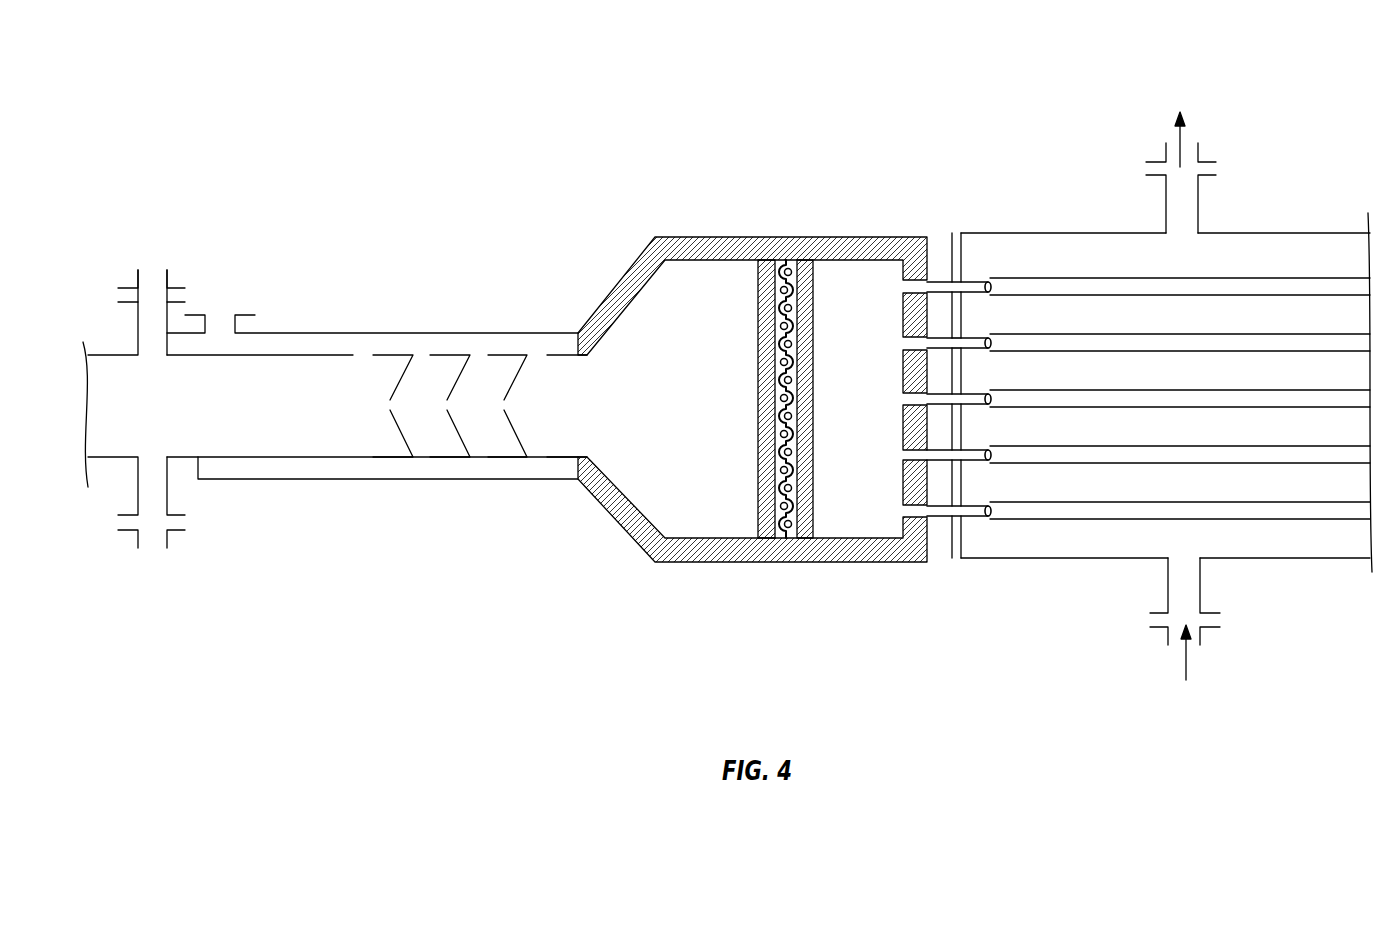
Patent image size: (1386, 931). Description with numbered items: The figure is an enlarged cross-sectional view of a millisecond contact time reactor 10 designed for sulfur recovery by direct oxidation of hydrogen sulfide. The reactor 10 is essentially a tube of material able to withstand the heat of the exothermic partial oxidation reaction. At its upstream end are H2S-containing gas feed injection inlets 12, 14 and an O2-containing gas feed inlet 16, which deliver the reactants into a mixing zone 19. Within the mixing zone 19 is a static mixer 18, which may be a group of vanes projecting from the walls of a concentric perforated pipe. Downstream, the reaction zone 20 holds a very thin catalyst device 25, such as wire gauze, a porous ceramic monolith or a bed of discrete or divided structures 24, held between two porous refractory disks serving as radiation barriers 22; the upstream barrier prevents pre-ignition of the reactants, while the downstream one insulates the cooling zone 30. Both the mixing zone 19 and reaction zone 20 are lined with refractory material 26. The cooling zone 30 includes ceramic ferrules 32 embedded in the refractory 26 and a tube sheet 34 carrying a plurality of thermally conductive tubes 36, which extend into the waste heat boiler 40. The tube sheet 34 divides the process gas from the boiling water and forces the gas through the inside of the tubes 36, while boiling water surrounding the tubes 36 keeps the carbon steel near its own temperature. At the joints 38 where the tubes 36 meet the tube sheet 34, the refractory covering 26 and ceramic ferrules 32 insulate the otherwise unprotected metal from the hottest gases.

The millisecond contact time reactor 10 is at (932, 157).
The H2S-containing gas feed injection inlet 12 is at (150, 538).
The H2S-containing gas feed injection inlet 14 is at (183, 237).
The O2-containing gas feed inlet 16 is at (262, 280).
The static mixer 18 is at (458, 377).
The mixing zone 19 is at (640, 307).
The reaction zone 20 is at (775, 300).
The radiation barrier 22 is at (803, 270).
The particle bed 24 is at (782, 343).
The catalyst device 25 is at (782, 390).
The refractory material 26 is at (915, 487).
The cooling zone 30 is at (1028, 285).
The ceramic ferrule 32 is at (943, 508).
The tube sheet 34 is at (937, 250).
The thermally conductive tube 36 is at (1032, 508).
The joint 38 is at (952, 362).
The waste heat boiler 40 is at (1267, 230).